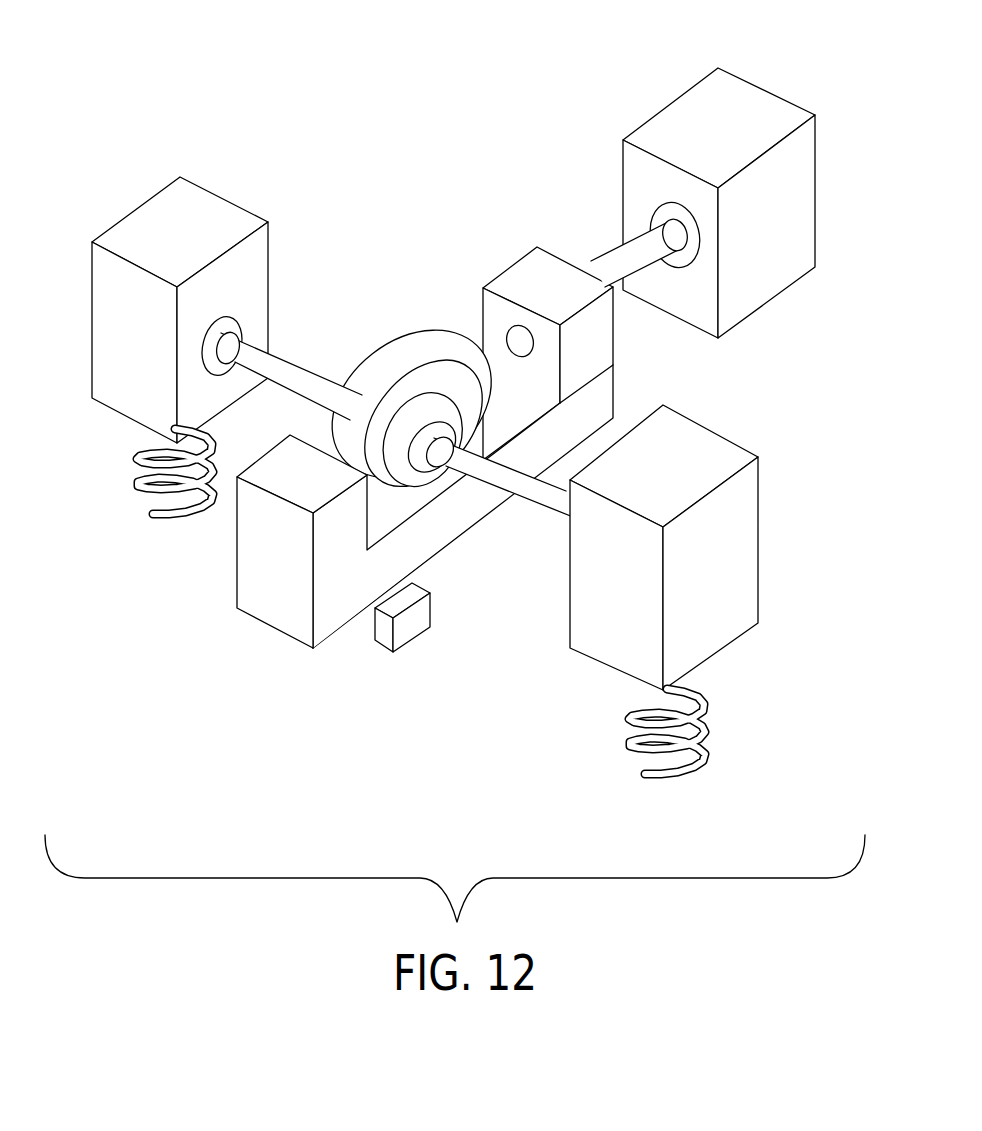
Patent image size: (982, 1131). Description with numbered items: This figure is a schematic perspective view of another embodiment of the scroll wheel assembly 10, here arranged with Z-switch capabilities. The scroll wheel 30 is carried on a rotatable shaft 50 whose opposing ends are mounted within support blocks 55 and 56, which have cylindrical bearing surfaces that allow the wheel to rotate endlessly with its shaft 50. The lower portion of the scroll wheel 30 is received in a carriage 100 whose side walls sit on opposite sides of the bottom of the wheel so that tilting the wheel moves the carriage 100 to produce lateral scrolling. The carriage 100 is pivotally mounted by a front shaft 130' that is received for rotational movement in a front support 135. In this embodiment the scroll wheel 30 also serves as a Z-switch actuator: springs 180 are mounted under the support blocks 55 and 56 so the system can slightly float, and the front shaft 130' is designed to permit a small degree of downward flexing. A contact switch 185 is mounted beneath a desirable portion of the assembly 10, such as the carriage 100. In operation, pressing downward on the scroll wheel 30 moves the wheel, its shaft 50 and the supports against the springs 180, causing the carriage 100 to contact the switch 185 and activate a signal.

The scroll wheel assembly 10 is at (358, 96).
The scroll wheel 30 is at (408, 353).
The rotatable shaft 50 is at (313, 363).
The support block 55 is at (212, 197).
The support block 56 is at (748, 548).
The carriage 100 is at (515, 282).
The front shaft 130' is at (641, 292).
The front support 135 is at (770, 293).
The spring 180 is at (167, 500).
The contact switch 185 is at (385, 650).